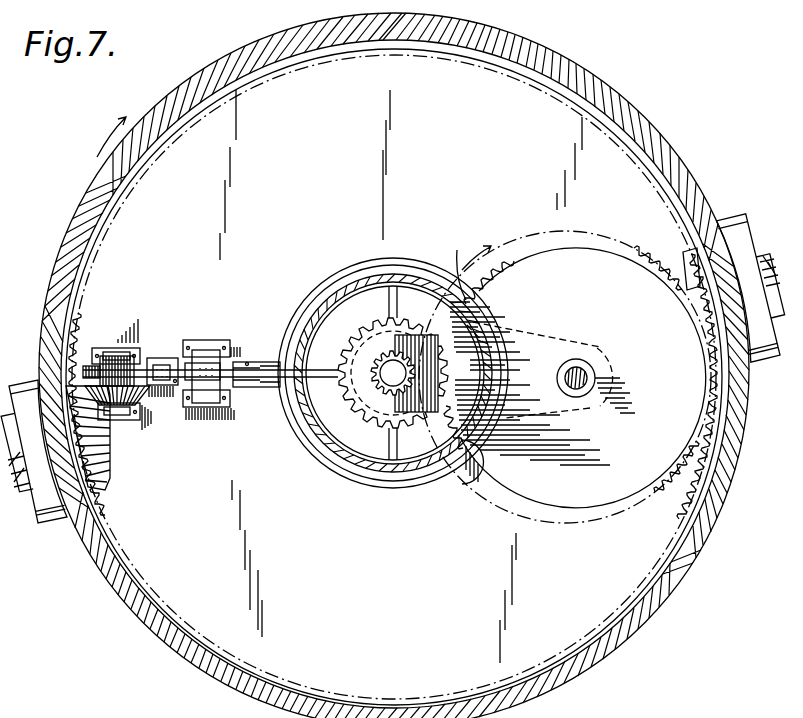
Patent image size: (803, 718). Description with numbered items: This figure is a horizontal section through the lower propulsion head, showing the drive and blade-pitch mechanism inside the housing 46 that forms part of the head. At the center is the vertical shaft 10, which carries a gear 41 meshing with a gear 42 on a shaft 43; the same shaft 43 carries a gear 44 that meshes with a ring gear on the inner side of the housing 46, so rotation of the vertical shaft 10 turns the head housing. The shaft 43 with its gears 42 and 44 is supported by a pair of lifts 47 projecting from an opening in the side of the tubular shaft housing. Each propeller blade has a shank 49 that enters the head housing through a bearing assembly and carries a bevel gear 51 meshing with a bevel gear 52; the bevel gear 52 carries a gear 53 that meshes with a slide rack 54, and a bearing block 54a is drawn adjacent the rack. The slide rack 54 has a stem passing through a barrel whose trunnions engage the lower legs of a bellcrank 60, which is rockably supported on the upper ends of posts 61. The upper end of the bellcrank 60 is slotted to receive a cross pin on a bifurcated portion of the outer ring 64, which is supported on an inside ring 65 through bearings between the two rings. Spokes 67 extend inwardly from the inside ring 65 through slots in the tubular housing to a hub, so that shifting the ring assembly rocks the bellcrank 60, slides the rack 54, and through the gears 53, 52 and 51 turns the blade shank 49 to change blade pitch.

The vertical shaft 10 is at (399, 362).
The gear 41 is at (356, 410).
The gear 42 is at (505, 494).
The shaft 43 is at (582, 366).
The gear 44 is at (501, 243).
The housing 46 is at (75, 233).
The lifts 47 is at (612, 362).
The propeller blade shank 49 is at (12, 492).
The bevel gear 51 is at (108, 474).
The bevel gear 52 is at (146, 400).
The gear 53 is at (136, 358).
The slide rack 54 is at (87, 366).
The bearing 54a is at (163, 358).
The bellcrank 60 is at (240, 362).
The posts 61 is at (205, 350).
The ring 64 is at (397, 257).
The inside ring 65 is at (345, 278).
The spokes 67 is at (389, 304).